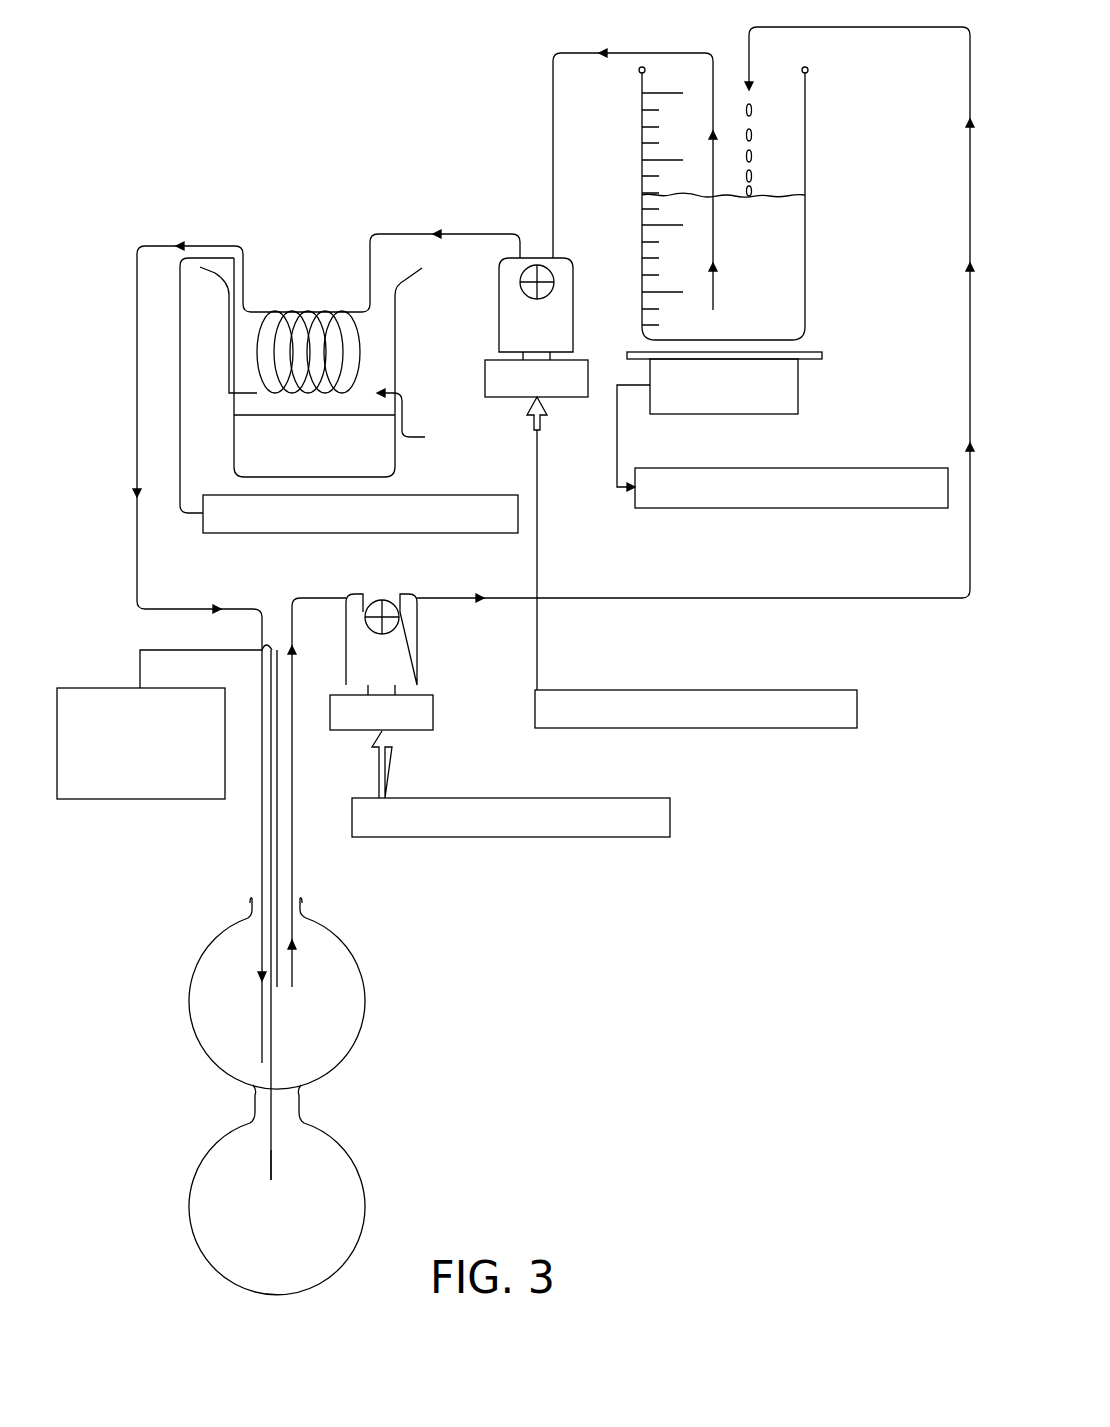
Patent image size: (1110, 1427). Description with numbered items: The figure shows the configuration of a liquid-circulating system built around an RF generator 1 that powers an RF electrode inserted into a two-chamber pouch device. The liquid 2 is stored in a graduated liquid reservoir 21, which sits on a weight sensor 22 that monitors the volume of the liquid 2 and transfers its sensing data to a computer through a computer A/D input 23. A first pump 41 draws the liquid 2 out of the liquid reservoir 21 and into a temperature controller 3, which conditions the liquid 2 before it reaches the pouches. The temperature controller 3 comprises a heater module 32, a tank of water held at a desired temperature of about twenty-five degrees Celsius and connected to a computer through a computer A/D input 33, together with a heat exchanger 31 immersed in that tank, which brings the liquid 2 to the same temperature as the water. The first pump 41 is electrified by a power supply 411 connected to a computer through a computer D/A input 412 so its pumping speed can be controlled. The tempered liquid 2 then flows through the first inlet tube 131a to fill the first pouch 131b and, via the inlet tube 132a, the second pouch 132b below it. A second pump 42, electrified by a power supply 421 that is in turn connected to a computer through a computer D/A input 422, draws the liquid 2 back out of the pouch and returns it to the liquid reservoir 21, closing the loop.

The RF generator 1 is at (95, 688).
The liquid 2 is at (767, 200).
The temperature controller 3 is at (222, 178).
The liquid reservoir 21 is at (805, 143).
The weight sensor 22 is at (798, 385).
The computer A/D input 23 is at (810, 468).
The heat exchanger 31 is at (305, 302).
The heater module 32 is at (228, 448).
The computer A/D input 33 is at (247, 533).
The first pump 41 is at (573, 288).
The second pump 42 is at (417, 642).
The power supply 411 is at (588, 362).
The computer D/A input 412 is at (712, 690).
The power supply 421 is at (433, 713).
The computer D/A input 422 is at (515, 837).
The first inlet tube 131a is at (277, 968).
The first pouch 131b is at (358, 1027).
The inlet tube of second pouch 132a is at (270, 1163).
The second pouch 132b is at (360, 1188).